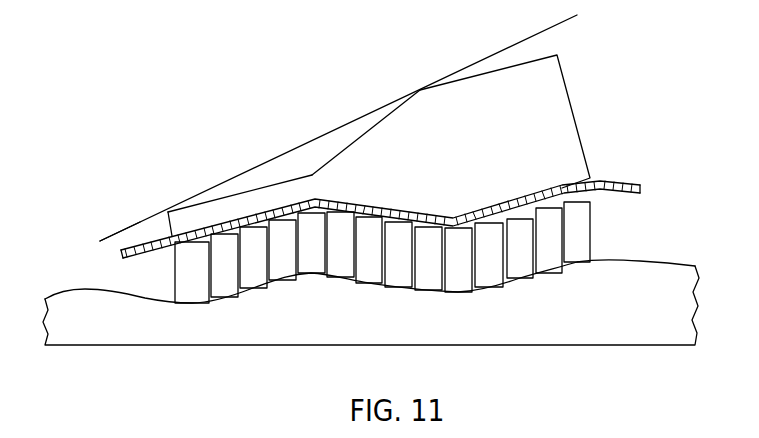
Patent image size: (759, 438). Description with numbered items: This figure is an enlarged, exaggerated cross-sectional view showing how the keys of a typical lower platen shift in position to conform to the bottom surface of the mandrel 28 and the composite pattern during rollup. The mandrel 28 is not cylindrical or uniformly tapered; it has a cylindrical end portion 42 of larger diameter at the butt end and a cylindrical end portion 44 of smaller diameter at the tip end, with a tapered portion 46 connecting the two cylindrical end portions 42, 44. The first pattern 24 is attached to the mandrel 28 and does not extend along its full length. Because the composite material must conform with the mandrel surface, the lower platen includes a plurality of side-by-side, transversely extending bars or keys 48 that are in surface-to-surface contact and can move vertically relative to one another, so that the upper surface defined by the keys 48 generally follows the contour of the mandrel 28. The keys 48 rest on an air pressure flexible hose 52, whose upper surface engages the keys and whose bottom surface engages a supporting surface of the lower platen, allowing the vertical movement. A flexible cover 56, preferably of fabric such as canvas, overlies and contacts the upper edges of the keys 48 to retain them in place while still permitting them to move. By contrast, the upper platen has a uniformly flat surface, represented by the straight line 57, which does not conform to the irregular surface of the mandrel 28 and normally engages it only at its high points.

The straight line 57 is at (516, 45).
The flexible cover 56 is at (114, 236).
The mandrel 28 is at (570, 117).
The tapered portion 46 is at (341, 154).
The first pattern 24 is at (219, 200).
The cylindrical end portion 44 is at (158, 215).
The cylindrical end portion 42 is at (565, 186).
The keys 48 is at (555, 228).
The air pressure flexible hose 52 is at (655, 271).